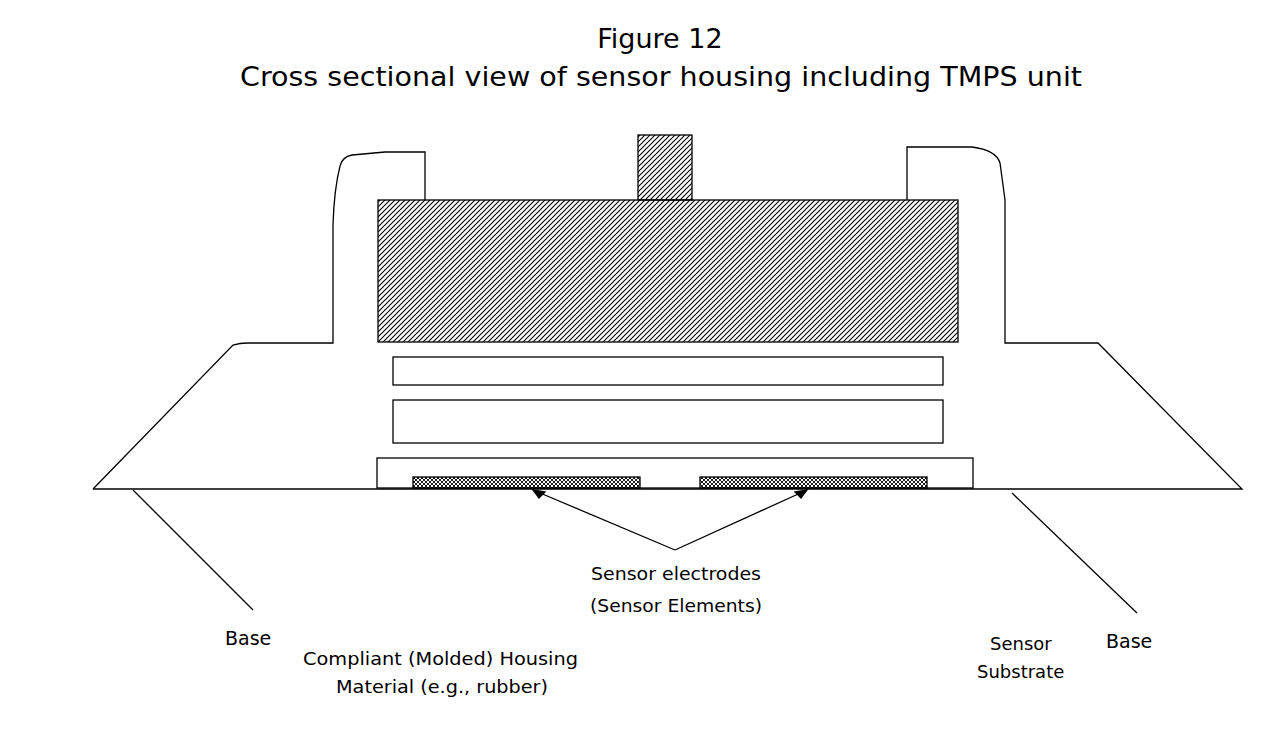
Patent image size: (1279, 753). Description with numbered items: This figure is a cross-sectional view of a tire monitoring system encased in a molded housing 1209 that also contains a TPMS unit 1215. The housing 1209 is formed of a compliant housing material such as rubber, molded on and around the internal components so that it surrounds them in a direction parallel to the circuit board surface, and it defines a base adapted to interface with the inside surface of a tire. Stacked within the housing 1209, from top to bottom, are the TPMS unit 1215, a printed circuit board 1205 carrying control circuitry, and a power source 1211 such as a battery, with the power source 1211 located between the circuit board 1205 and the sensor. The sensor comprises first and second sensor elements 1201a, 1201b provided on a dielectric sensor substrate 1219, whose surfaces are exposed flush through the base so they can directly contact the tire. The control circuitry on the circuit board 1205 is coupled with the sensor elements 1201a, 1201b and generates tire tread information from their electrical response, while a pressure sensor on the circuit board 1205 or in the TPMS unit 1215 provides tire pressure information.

The TPMS unit 1215 is at (953, 232).
The printed circuit board 1205 is at (943, 373).
The power source 1211 is at (943, 428).
The housing 1209 is at (257, 427).
The dielectric sensor substrate 1219 is at (943, 465).
The first sensor element 1201a is at (486, 490).
The second sensor element 1201b is at (837, 490).